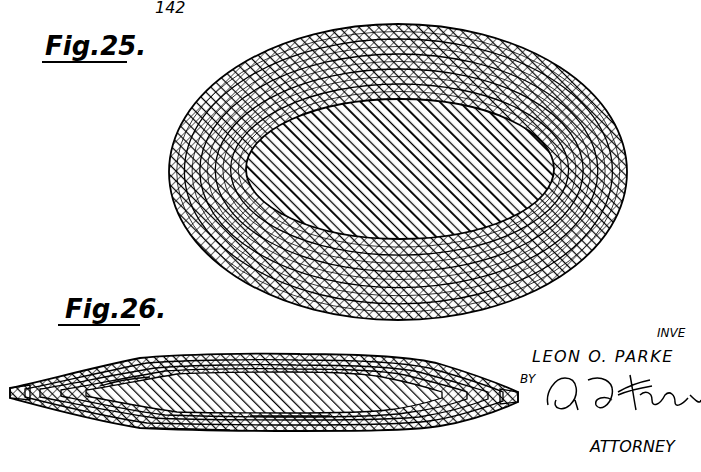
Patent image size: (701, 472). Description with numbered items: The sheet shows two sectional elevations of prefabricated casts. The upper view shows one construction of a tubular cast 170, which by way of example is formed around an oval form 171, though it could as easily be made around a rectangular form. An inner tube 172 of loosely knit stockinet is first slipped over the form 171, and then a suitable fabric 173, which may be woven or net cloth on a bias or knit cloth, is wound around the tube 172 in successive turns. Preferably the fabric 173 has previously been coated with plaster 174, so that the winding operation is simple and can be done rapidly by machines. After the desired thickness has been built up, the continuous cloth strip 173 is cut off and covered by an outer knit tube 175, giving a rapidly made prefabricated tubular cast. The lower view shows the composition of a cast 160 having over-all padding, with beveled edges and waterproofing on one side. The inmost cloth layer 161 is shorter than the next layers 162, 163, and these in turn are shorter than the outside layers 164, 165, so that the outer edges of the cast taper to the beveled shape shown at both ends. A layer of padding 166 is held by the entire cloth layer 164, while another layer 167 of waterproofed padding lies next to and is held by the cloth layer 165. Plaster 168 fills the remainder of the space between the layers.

In FIG. 26, the cast 160 is at (436, 366).
In FIG. 26, the inmost cloth layer 161 is at (278, 362).
In FIG. 26, the cloth layer 162 is at (140, 383).
In FIG. 26, the cloth layer 163 is at (119, 420).
In FIG. 26, the outside cloth layer 164 is at (206, 367).
In FIG. 26, the outside cloth layer 165 is at (183, 433).
In FIG. 26, the layer of padding 166 is at (346, 362).
In FIG. 26, the layer of waterproofed padding 167 is at (283, 415).
In FIG. 26, the plaster 168 is at (78, 403).
In FIG. 25, the cast 170 is at (510, 44).
In FIG. 25, the oval form 171 is at (412, 178).
In FIG. 25, the inner tube 172 is at (320, 119).
In FIG. 25, the fabric 173 is at (214, 149).
In FIG. 25, the plaster 174 is at (188, 182).
In FIG. 25, the outer knit tube 175 is at (338, 30).